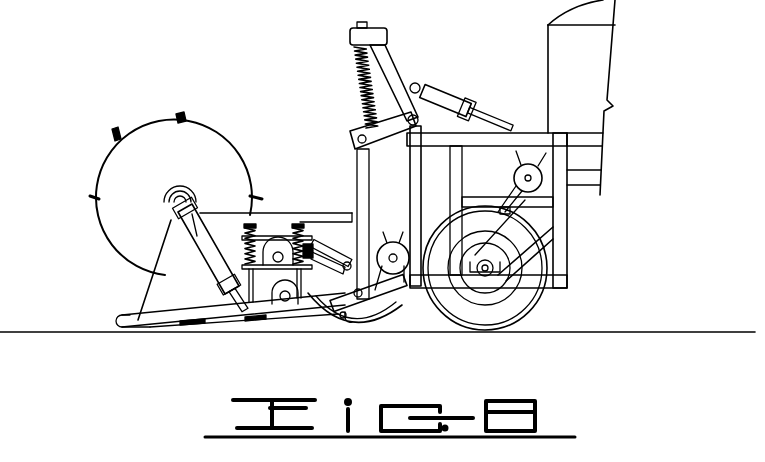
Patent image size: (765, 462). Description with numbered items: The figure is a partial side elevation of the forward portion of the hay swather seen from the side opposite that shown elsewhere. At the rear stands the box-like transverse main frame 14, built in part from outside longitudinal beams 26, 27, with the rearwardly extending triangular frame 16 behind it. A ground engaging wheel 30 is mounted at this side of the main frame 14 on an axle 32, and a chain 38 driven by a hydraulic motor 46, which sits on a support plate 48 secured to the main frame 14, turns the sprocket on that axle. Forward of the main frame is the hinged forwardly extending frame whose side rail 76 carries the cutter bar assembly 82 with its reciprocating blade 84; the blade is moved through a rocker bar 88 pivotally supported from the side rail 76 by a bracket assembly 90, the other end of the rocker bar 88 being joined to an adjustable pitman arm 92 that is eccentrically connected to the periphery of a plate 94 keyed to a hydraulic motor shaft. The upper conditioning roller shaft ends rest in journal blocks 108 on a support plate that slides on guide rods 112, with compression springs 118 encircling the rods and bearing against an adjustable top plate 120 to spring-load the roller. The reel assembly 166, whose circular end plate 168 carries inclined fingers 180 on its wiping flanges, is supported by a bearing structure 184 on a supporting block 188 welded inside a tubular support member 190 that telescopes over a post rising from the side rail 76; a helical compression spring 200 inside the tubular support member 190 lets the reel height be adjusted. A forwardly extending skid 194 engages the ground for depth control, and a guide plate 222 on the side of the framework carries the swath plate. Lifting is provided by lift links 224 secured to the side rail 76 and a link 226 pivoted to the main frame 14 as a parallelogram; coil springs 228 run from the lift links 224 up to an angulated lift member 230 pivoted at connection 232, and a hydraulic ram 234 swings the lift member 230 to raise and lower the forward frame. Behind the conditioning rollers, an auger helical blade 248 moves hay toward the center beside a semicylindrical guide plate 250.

The transverse main frame 14 is at (580, 236).
The rearwardly extending frame 16 is at (626, 130).
The outside longitudinal beam 26 is at (522, 132).
The outside longitudinal beam 27 is at (448, 290).
The ground engaging wheel 30 is at (528, 306).
The axle 32 is at (484, 277).
The chain 38 is at (506, 186).
The hydraulic motor 46 is at (540, 178).
The support plate 48 is at (524, 201).
The side rail 76 is at (392, 288).
The cutter bar assembly 82 is at (178, 326).
The reciprocating blade 84 is at (196, 326).
The rocker bar 88 is at (295, 320).
The bracket assembly 90 is at (270, 320).
The pitman arm 92 is at (346, 313).
The plate 94 is at (400, 245).
The journal block 108 is at (224, 276).
The guide rod 112 is at (300, 224).
The compression spring 118 is at (306, 241).
The adjustable top plate 120 is at (278, 226).
The reel assembly 166 is at (115, 132).
The circular end plate 168 is at (200, 163).
The finger 180 is at (178, 116).
The bearing structure 184 is at (171, 214).
The supporting block 188 is at (173, 226).
The tubular support member 190 is at (206, 256).
The skid 194 is at (118, 314).
The helical compression spring 200 is at (166, 202).
The guide plate 222 is at (350, 239).
The lift link 224 is at (358, 162).
The link 226 is at (386, 136).
The coil spring 228 is at (350, 70).
The angulated lift member 230 is at (386, 45).
The pivotal connection 232 is at (414, 126).
The hydraulic ram 234 is at (466, 108).
The helical blade 248 is at (332, 315).
The semicylindrical guide plate 250 is at (386, 324).